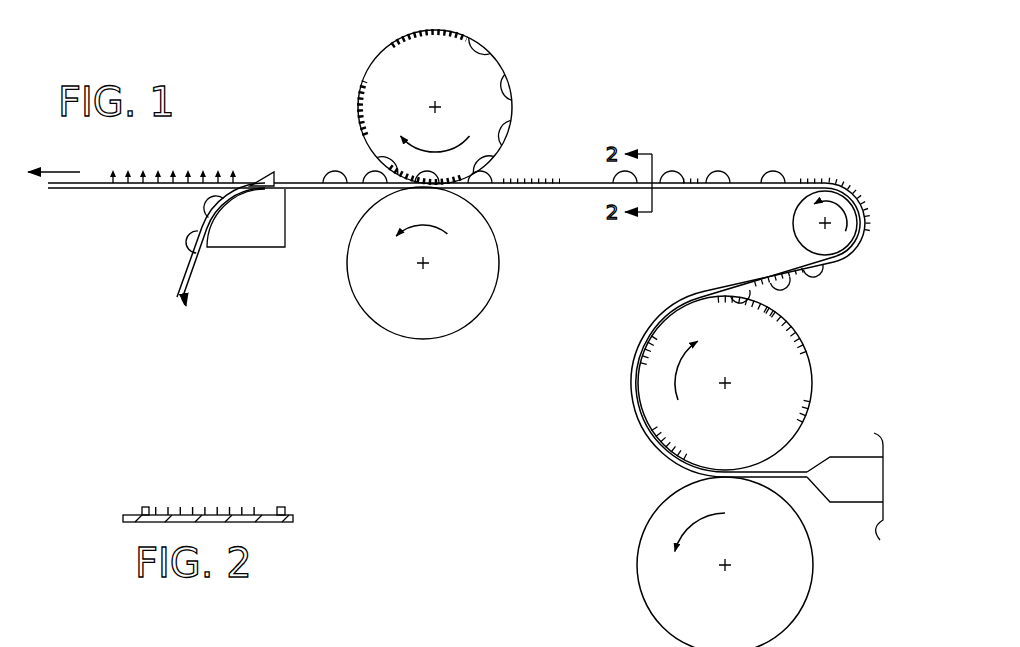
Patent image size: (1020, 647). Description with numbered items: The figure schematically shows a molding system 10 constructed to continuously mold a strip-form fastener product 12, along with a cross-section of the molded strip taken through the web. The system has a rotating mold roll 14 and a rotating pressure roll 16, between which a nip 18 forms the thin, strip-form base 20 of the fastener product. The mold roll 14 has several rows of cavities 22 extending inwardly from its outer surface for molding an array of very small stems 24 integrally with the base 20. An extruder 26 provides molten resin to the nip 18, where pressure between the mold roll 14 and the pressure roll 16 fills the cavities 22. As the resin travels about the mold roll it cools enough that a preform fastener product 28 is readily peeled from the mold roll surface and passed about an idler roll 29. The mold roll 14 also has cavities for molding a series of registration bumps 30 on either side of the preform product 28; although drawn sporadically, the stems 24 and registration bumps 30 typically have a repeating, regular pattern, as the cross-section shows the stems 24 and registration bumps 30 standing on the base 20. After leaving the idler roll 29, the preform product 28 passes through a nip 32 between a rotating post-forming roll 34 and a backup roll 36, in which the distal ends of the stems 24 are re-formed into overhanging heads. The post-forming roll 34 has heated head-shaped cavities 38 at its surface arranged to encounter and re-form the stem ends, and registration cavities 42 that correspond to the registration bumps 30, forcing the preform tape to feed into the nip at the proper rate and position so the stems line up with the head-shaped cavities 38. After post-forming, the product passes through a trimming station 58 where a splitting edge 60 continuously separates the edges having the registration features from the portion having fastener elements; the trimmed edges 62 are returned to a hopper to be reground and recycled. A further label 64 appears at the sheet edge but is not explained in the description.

In FIG. 1, the molding system 10 is at (481, 418).
In FIG. 1, the strip-form fastener product 12 is at (130, 191).
In FIG. 1, the mold roll 14 is at (745, 367).
In FIG. 1, the pressure roll 16 is at (693, 611).
In FIG. 1, the nip 18 is at (676, 477).
In FIG. 1, the base 20 is at (630, 384).
In FIG. 2, the base 20 is at (282, 523).
In FIG. 1, the cavities 22 is at (684, 450).
In FIG. 1, the stems 24 is at (538, 183).
In FIG. 2, the stems 24 is at (233, 508).
In FIG. 1, the extruder 26 is at (843, 489).
In FIG. 1, the preform fastener product 28 is at (797, 287).
In FIG. 1, the idler roll 29 is at (794, 223).
In FIG. 1, the registration bumps 30 is at (773, 173).
In FIG. 2, the registration bumps 30 is at (142, 508).
In FIG. 1, the nip 32 is at (478, 198).
In FIG. 1, the post-forming roll 34 is at (421, 69).
In FIG. 1, the backup roll 36 is at (411, 311).
In FIG. 1, the head-shaped cavities 38 is at (368, 106).
In FIG. 1, the registration cavities 42 is at (503, 88).
In FIG. 1, the trimming station 58 is at (253, 142).
In FIG. 1, the splitting edge 60 is at (268, 180).
In FIG. 1, the trimmed edges 62 is at (203, 226).
In FIG. 2, the element 64 is at (365, 641).